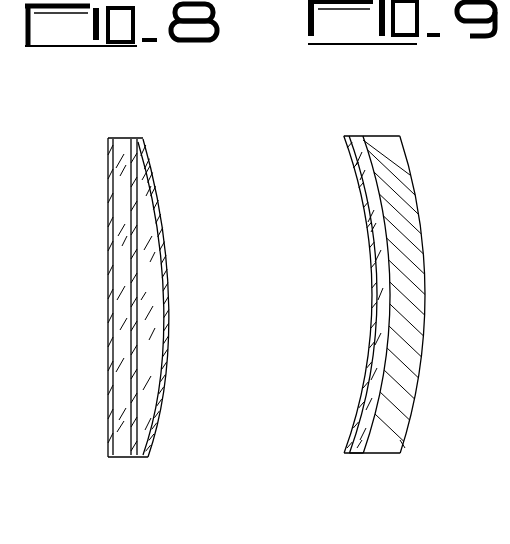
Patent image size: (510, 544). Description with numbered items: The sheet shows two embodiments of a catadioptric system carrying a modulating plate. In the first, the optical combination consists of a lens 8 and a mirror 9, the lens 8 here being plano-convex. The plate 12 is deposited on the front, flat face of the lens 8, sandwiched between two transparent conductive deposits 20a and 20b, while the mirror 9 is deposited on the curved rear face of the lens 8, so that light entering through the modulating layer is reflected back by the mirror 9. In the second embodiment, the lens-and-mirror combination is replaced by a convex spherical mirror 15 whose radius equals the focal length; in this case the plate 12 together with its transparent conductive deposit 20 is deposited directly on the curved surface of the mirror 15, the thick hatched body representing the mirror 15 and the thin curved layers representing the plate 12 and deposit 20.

In FIG. 8, the lens 8 is at (143, 227).
In FIG. 8, the mirror 9 is at (163, 359).
In FIG. 8, the plate 12 is at (127, 137).
In FIG. 9, the plate 12 is at (360, 457).
In FIG. 9, the convex spherical mirror 15 is at (400, 168).
In FIG. 9, the transparent conductive deposit 20 is at (373, 305).
In FIG. 8, the transparent conductive deposit 20a is at (112, 197).
In FIG. 8, the transparent conductive deposit 20b is at (137, 136).